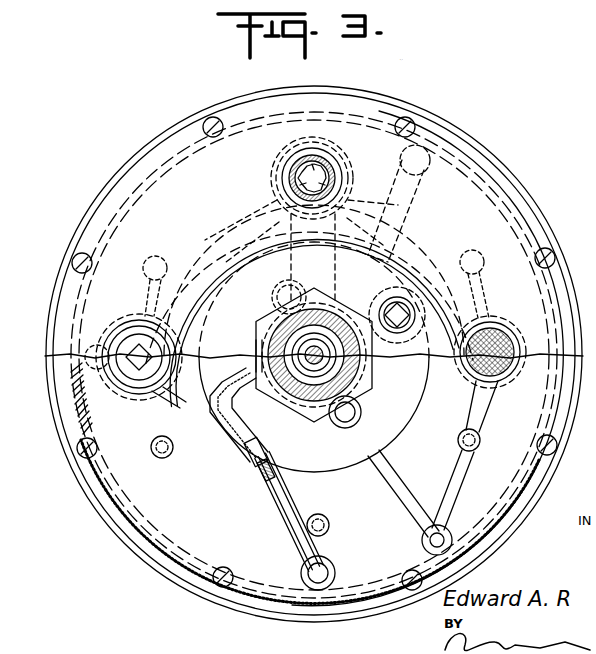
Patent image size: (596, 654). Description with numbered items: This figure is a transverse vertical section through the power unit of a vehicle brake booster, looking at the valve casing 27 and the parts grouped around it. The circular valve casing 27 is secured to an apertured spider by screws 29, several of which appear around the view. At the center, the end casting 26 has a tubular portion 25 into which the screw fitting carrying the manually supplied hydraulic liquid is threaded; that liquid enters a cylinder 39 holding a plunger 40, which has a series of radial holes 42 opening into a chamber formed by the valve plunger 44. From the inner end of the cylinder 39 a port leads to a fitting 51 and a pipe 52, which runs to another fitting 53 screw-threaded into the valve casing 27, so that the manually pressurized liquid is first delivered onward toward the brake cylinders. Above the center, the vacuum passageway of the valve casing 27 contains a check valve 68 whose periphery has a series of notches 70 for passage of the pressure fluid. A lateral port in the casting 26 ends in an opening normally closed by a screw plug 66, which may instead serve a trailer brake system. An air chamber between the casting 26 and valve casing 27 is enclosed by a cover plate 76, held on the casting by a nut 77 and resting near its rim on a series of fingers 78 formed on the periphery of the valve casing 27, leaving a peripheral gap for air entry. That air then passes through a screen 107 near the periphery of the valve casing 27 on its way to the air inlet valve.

The tubular portion 25 is at (326, 318).
The end casting 26 is at (245, 372).
The valve casing 27 is at (410, 455).
The screws 29 is at (158, 450).
The cylinder 39 is at (334, 344).
The plunger 40 is at (304, 372).
The radial holes 42 is at (332, 360).
The valve plunger 44 is at (270, 344).
The fitting 51 is at (272, 452).
The pipe 52 is at (290, 528).
The fitting 53 is at (334, 566).
The screw plug 66 is at (404, 303).
The check valve 68 is at (290, 176).
The peripheral notches 70 is at (322, 168).
The cover plate 76 is at (498, 202).
The nut 77 is at (270, 325).
The fingers 78 is at (130, 168).
The screen 107 is at (492, 345).